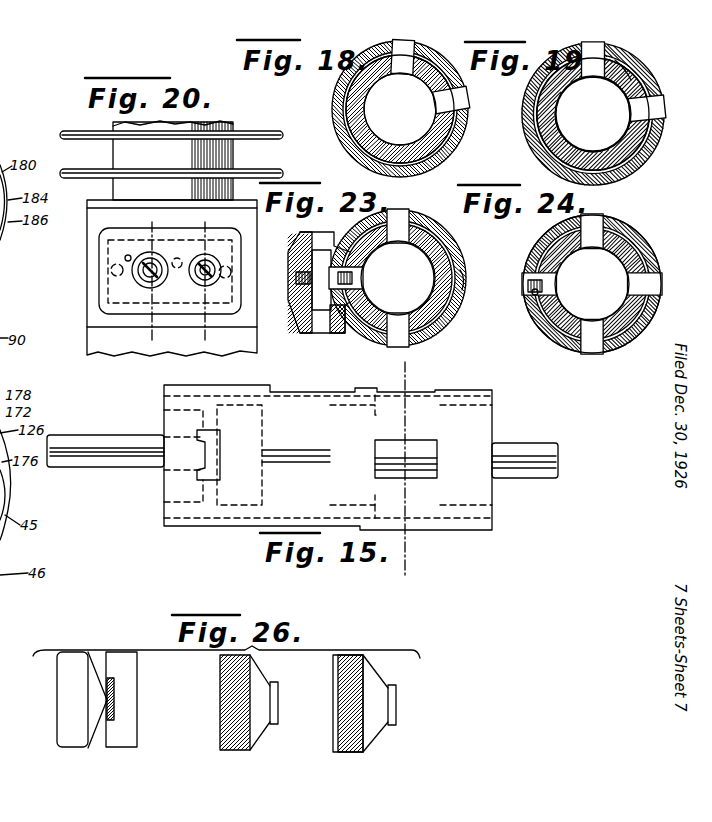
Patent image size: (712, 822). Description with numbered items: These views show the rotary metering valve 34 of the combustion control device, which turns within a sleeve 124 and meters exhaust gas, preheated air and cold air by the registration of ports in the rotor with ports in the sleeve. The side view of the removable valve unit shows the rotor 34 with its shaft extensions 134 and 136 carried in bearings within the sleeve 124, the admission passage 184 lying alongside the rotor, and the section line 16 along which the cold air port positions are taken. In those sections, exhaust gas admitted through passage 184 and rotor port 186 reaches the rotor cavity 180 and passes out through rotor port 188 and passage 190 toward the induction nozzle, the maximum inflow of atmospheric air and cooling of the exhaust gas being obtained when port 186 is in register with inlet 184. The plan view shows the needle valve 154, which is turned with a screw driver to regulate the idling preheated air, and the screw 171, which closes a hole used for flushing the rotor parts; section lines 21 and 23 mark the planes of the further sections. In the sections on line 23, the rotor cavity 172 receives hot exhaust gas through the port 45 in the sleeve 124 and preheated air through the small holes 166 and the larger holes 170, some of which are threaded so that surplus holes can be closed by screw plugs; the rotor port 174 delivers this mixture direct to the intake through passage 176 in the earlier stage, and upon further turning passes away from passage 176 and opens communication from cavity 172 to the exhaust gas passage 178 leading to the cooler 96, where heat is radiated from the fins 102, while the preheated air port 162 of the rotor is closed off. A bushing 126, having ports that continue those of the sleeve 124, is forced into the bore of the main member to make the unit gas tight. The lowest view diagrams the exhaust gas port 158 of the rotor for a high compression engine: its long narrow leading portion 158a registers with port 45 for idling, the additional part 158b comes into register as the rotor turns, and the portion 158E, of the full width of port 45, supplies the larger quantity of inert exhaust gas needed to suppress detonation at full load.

In FIG. 20, the outer heat radiating fins 102 is at (98, 115).
In FIG. 20, the cooler 96 is at (113, 152).
In FIG. 20, the needle valve 154 is at (134, 279).
In FIG. 20, the screw 171 is at (221, 266).
In FIG. 20, the section line 21— 21 is at (167, 223).
In FIG. 20, the section line 23— 23 is at (227, 227).
In FIG. 18, the rotary metering valve 34 is at (355, 108).
In FIG. 19, the rotary metering valve 34 is at (630, 162).
In FIG. 15, the rotary metering valve 34 is at (425, 512).
In FIG. 18, the passage 190 is at (404, 50).
In FIG. 19, the passage 190 is at (590, 57).
In FIG. 18, the admission passage 184 is at (465, 95).
In FIG. 19, the admission passage 184 is at (655, 125).
In FIG. 15, the admission passage 184 is at (427, 449).
In FIG. 18, the rotor port 186 is at (460, 117).
In FIG. 19, the rotor port 186 is at (632, 126).
In FIG. 18, the sleeve 124 is at (347, 130).
In FIG. 19, the sleeve 124 is at (632, 75).
In FIG. 15, the sleeve 124 is at (463, 520).
In FIG. 19, the rotor port 188 is at (620, 60).
In FIG. 19, the rotor cavity 180 is at (567, 117).
In FIG. 23, the rotor port 174 is at (450, 283).
In FIG. 24, the rotor port 174 is at (613, 251).
In FIG. 23, the exhaust gas passage 178 is at (408, 225).
In FIG. 24, the exhaust gas passage 178 is at (592, 227).
In FIG. 23, the exhaust gas port 45 is at (405, 340).
In FIG. 26, the exhaust gas port 45 is at (137, 660).
In FIG. 23, the larger preheated air holes 170 is at (348, 278).
In FIG. 24, the larger preheated air holes 170 is at (522, 288).
In FIG. 23, the rotor cavity 172 is at (408, 252).
In FIG. 24, the rotor cavity 172 is at (592, 312).
In FIG. 23, the passage 176 is at (452, 283).
In FIG. 24, the passage 176 is at (652, 298).
In FIG. 15, the passage 176 is at (282, 458).
In FIG. 24, the small holes 166 is at (533, 268).
In FIG. 24, the bushing 126 is at (602, 284).
In FIG. 24, the preheated air port 162 is at (548, 298).
In FIG. 15, the shaft extension 136 is at (144, 455).
In FIG. 15, the shaft extension 134 is at (525, 463).
In FIG. 15, the section line 16— 16 is at (399, 370).
In FIG. 26, the exhaust gas port 158 is at (90, 746).
In FIG. 26, the leading portion of exhaust gas port 158a is at (44, 699).
In FIG. 26, the additional part of exhaust gas port 158b is at (53, 700).
In FIG. 26, the full-load portion of exhaust gas port 158E is at (70, 742).